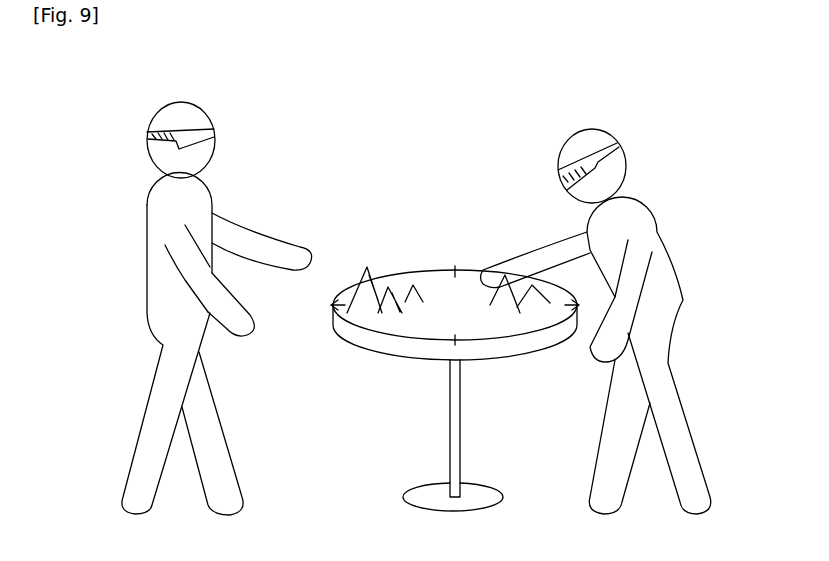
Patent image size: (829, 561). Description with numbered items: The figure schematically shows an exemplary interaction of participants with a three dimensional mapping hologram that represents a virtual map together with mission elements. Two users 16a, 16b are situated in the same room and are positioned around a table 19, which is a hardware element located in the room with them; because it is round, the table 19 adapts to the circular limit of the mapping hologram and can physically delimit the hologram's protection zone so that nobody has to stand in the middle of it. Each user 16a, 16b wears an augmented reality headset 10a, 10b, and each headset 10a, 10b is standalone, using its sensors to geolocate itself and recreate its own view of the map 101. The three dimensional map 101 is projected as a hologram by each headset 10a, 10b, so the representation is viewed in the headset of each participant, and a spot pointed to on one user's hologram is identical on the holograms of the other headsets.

The headset 10a is at (538, 160).
The headset 10b is at (242, 133).
The user 16a is at (703, 303).
The user 16b is at (122, 279).
The table 19 is at (448, 452).
The map 101 is at (428, 277).